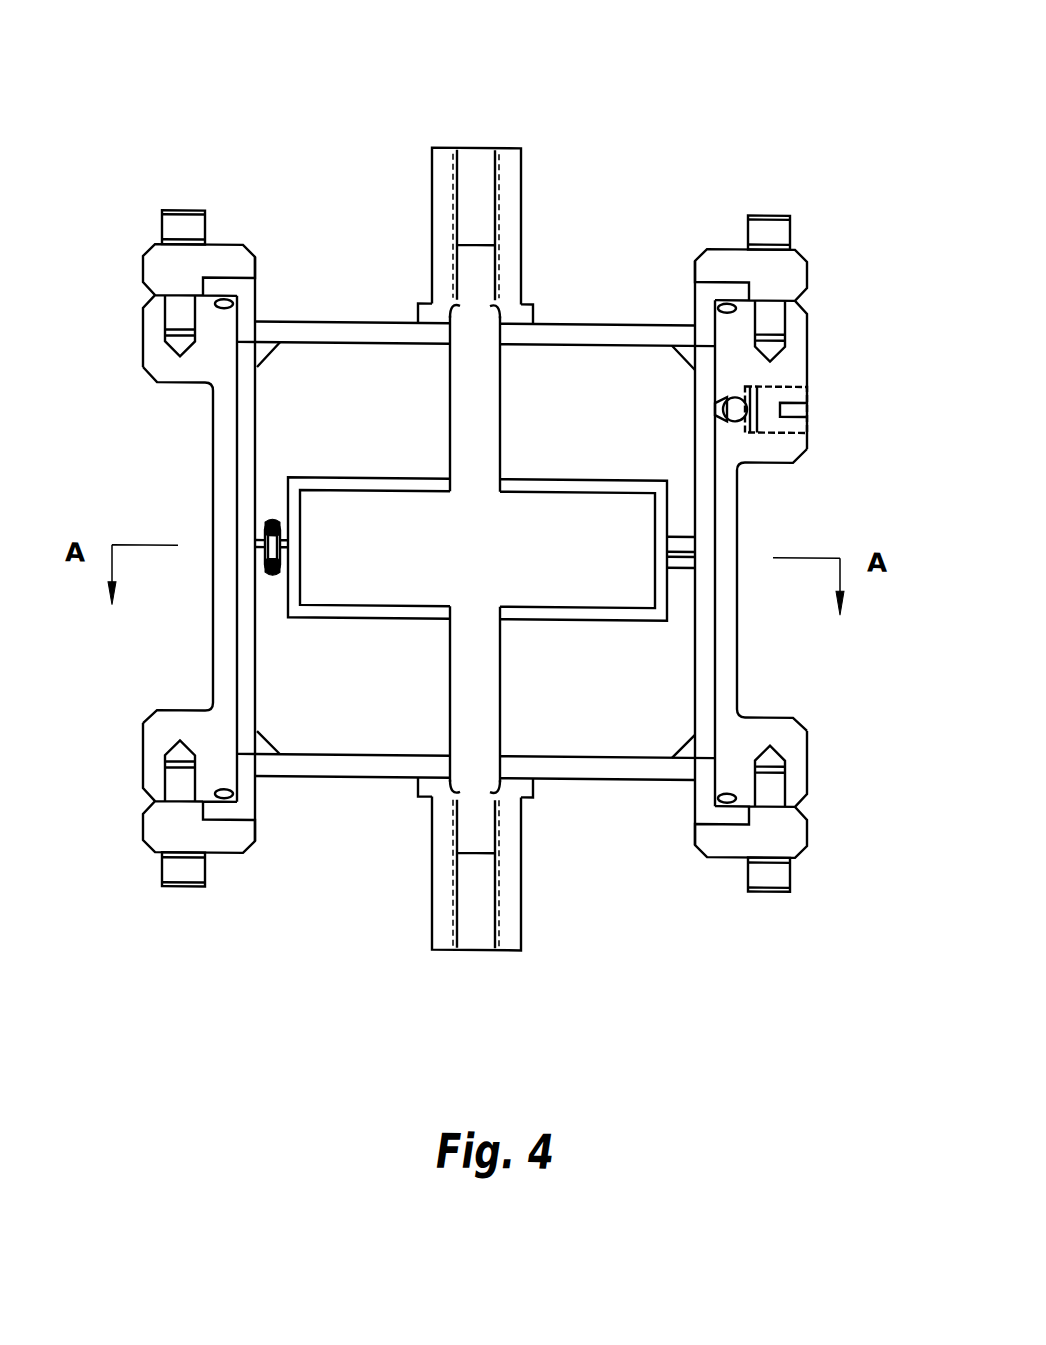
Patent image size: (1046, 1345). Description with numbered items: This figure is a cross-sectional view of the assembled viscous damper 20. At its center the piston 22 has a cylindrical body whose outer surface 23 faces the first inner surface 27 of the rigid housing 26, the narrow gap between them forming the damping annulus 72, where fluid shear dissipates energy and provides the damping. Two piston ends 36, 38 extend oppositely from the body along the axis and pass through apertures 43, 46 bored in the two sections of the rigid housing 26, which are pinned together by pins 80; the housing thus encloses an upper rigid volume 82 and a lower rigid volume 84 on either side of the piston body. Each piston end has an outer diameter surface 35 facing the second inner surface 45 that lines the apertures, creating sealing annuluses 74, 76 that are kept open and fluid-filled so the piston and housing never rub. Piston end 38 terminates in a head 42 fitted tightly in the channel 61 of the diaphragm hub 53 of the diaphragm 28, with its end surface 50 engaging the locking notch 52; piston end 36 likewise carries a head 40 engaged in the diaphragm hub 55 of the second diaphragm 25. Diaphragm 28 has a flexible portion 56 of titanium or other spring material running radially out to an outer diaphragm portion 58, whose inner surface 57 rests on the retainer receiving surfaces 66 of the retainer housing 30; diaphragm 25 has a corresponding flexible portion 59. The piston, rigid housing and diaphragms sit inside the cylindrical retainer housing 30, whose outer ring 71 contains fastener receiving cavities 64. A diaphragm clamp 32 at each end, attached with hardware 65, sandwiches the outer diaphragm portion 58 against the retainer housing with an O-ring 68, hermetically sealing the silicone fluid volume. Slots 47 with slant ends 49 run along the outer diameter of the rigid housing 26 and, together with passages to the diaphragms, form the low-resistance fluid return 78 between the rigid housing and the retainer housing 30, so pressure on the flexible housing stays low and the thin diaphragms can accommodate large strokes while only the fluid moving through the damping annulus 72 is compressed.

The viscous damper 20 is at (596, 114).
The piston 22 is at (475, 548).
The outer surface 23 is at (656, 592).
The second diaphragm 25 is at (531, 315).
The rigid housing 26 is at (693, 645).
The first inner surface 27 is at (667, 528).
The diaphragm 28 is at (537, 793).
The retainer housing 30 is at (738, 578).
The diaphragm clamp 32 is at (238, 247).
The outer diameter surface 35 is at (450, 472).
The piston end 36 is at (490, 378).
The piston end 38 is at (490, 732).
The head 40 is at (500, 218).
The head 42 is at (455, 833).
The aperture 43 is at (497, 421).
The second inner surface 45 is at (500, 482).
The aperture 46 is at (503, 662).
The slots 47 is at (695, 471).
The slant ends 49 is at (257, 330).
The end surface 50 is at (497, 822).
The locking notch 52 is at (457, 790).
The diaphragm hub 53 is at (432, 923).
The diaphragm hub 55 is at (440, 215).
The flexible portion 56 is at (640, 780).
The inner surface 57 is at (731, 803).
The outer diaphragm portion 58 is at (730, 823).
The flexible portion 59 is at (560, 323).
The channel 61 is at (521, 930).
The fastener receiving cavities 64 is at (165, 320).
The hardware 65 is at (180, 213).
The retainer receiving surfaces 66 is at (800, 854).
The O-ring 68 is at (726, 301).
The outer ring 71 is at (150, 723).
The damping annulus 72 is at (290, 558).
The sealing annulus 74 is at (450, 402).
The sealing annulus 76 is at (452, 683).
The fluid return 78 is at (250, 435).
The pins 80 is at (262, 542).
The upper rigid volume 82 is at (320, 480).
The lower rigid volume 84 is at (334, 626).